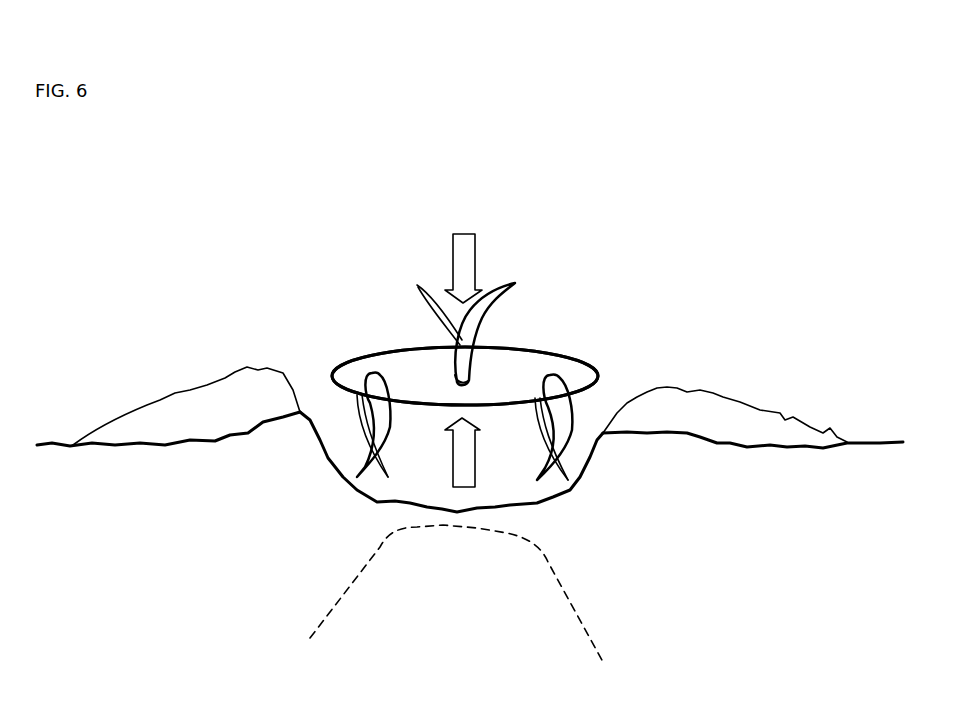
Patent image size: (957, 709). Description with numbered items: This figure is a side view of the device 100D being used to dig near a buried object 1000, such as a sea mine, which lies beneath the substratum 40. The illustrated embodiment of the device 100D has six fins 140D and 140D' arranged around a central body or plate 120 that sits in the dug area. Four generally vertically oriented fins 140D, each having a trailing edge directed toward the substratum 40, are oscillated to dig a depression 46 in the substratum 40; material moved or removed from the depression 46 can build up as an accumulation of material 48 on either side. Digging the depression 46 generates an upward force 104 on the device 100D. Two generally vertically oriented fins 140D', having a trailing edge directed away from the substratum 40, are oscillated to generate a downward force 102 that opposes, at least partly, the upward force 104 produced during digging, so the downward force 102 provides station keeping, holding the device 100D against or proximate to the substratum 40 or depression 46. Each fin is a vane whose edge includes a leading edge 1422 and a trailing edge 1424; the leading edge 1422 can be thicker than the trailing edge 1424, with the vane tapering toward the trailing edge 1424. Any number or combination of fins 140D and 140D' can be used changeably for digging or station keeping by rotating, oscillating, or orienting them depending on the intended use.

The substratum 40 is at (170, 433).
The accumulation of material 48 is at (193, 390).
The depression 46 is at (332, 463).
The buried object 1000 is at (550, 633).
The device 100D is at (335, 335).
The plate 120 is at (422, 367).
The trailing edge 1424 is at (517, 285).
The leading edge 1422 is at (470, 382).
The fins 140D' is at (542, 301).
The fins 140D is at (488, 375).
The downward force 102 is at (477, 262).
The upward force 104 is at (478, 462).